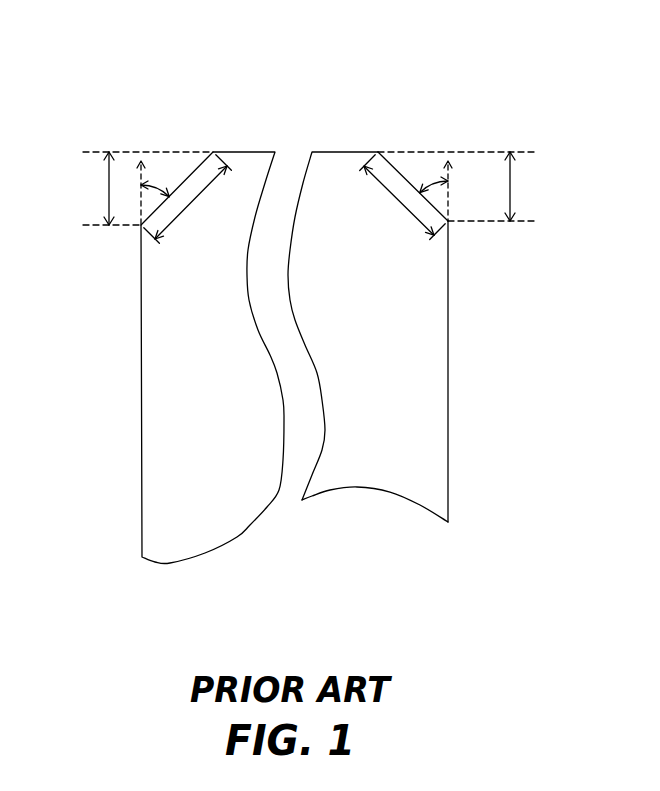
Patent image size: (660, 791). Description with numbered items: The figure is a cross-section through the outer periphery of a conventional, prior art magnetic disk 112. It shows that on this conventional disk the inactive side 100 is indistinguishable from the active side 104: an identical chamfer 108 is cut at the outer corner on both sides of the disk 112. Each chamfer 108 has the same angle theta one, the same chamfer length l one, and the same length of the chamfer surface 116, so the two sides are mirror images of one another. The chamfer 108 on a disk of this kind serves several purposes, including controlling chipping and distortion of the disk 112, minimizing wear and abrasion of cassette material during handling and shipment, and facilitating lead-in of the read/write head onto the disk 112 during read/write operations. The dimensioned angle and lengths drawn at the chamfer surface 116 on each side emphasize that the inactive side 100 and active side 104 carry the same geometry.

The inactive side 100 is at (449, 403).
The active side 104 is at (143, 410).
The chamfer 108 is at (147, 128).
The disk 112 is at (465, 546).
The chamfer surface 116 is at (197, 168).